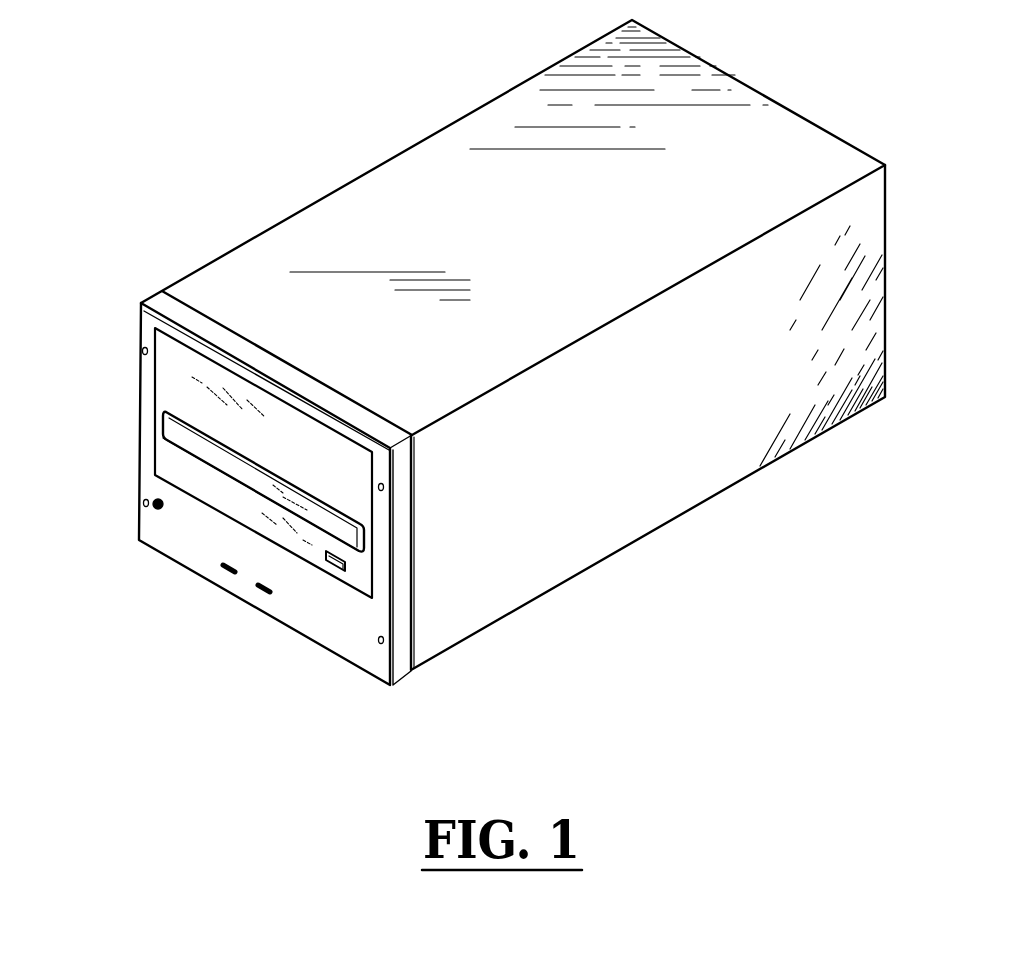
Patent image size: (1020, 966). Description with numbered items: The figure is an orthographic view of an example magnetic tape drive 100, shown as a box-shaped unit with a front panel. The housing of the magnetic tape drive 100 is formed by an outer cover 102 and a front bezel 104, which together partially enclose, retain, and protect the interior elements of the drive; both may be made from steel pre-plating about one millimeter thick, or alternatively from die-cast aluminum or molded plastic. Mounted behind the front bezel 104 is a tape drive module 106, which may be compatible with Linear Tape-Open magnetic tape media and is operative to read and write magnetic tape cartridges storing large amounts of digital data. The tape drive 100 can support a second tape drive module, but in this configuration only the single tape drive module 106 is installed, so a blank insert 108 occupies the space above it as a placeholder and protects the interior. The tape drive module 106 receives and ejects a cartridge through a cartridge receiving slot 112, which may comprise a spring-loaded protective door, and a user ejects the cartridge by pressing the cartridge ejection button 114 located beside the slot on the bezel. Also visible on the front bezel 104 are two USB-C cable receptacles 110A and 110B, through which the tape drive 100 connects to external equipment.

The magnetic tape drive 100 is at (358, 132).
The outer cover 102 is at (655, 490).
The front bezel 104 is at (327, 627).
The tape drive module 106 is at (177, 462).
The blank insert 108 is at (177, 375).
The USB-C cable receptacle 110A is at (222, 573).
The USB-C cable receptacle 110B is at (260, 595).
The cartridge receiving slot 112 is at (230, 468).
The cartridge ejection button 114 is at (330, 565).